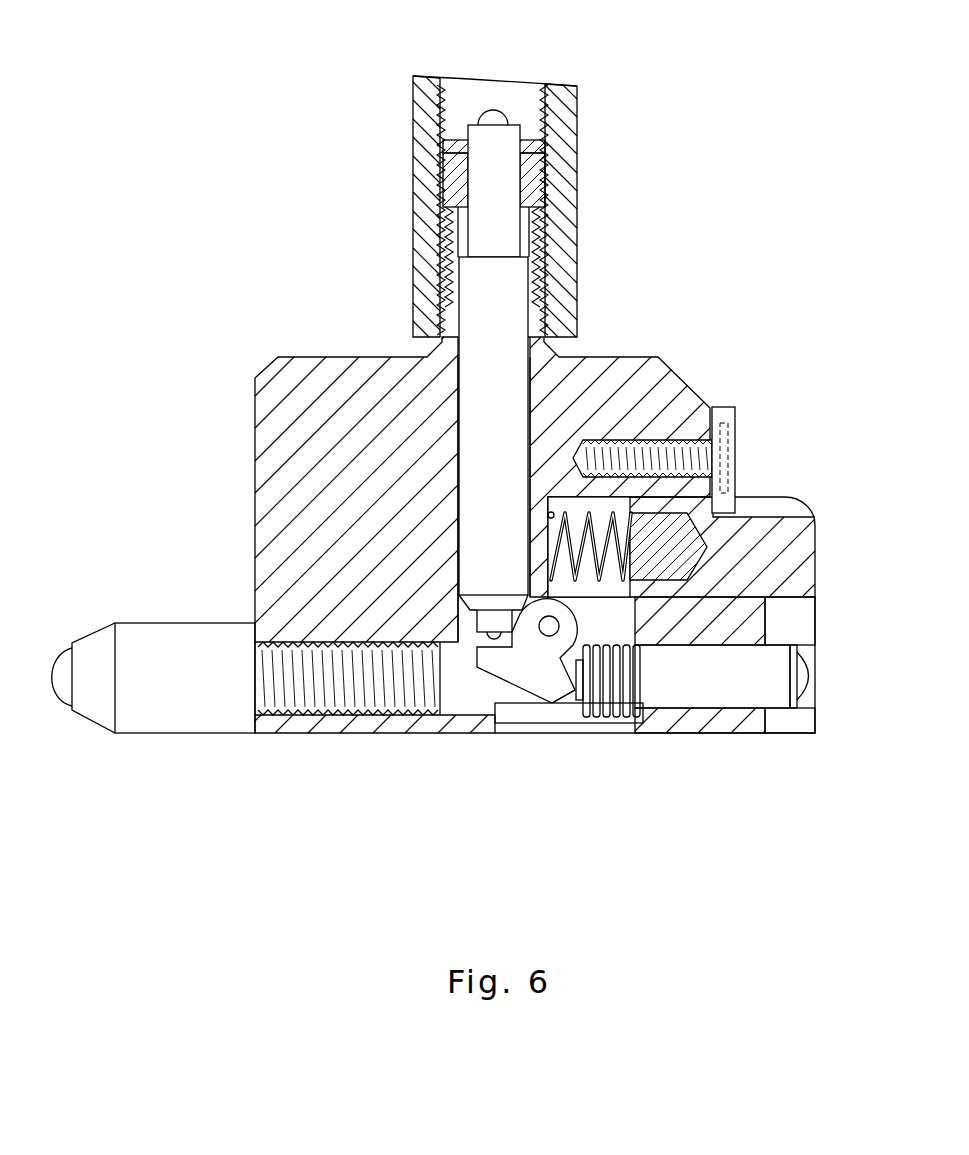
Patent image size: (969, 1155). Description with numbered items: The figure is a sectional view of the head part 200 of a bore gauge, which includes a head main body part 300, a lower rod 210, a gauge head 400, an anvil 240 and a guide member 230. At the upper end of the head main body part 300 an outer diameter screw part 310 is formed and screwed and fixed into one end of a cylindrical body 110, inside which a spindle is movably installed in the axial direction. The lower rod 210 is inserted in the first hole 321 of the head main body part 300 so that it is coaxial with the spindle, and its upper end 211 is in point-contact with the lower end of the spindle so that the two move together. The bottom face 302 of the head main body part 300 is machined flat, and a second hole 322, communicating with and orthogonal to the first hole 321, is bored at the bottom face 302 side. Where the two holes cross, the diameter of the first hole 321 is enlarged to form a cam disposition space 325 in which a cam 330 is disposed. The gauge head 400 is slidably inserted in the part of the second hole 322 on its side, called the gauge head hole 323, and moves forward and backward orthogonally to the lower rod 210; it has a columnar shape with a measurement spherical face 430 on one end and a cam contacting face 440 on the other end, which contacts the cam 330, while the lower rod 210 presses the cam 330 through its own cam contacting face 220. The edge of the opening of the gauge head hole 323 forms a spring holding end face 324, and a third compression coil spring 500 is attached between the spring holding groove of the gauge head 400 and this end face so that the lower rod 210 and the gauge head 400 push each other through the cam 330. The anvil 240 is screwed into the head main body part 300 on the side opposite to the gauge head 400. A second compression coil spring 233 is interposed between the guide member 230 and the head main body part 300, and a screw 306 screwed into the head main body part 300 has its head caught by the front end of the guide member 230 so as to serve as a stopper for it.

The head part 200 is at (703, 176).
The cylindrical body 110 is at (422, 182).
The outer diameter screw part 310 is at (560, 237).
The upper end 211 is at (490, 112).
The lower rod 210 is at (480, 408).
The head main body part 300 is at (322, 485).
The first hole 321 is at (512, 398).
The screw 306 is at (730, 437).
The second compression coil spring 233 is at (688, 545).
The guide member 230 is at (783, 555).
The cam disposition space 325 is at (603, 624).
The spring holding end face 324 is at (640, 630).
The cam contacting face 220 is at (480, 636).
The cam 330 is at (553, 683).
The cam contacting face 440 is at (558, 698).
The third compression coil spring 500 is at (640, 700).
The second hole 322 is at (455, 704).
The bottom face 302 is at (440, 720).
The anvil 240 is at (218, 703).
The gauge head hole 323 is at (665, 718).
The gauge head 400 is at (768, 680).
The measurement spherical face 430 is at (803, 678).